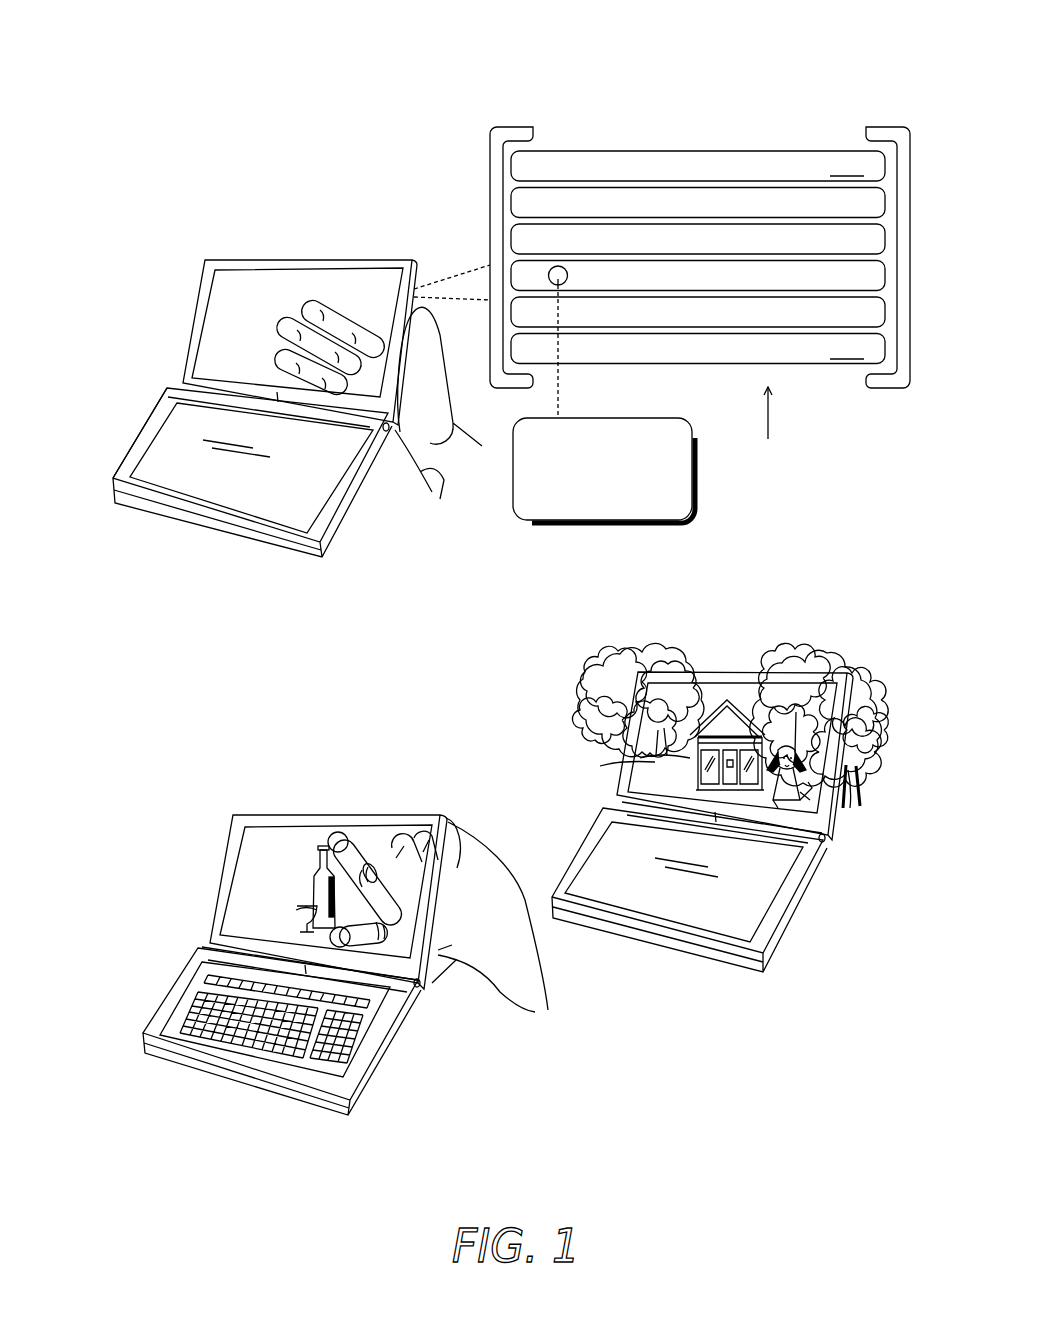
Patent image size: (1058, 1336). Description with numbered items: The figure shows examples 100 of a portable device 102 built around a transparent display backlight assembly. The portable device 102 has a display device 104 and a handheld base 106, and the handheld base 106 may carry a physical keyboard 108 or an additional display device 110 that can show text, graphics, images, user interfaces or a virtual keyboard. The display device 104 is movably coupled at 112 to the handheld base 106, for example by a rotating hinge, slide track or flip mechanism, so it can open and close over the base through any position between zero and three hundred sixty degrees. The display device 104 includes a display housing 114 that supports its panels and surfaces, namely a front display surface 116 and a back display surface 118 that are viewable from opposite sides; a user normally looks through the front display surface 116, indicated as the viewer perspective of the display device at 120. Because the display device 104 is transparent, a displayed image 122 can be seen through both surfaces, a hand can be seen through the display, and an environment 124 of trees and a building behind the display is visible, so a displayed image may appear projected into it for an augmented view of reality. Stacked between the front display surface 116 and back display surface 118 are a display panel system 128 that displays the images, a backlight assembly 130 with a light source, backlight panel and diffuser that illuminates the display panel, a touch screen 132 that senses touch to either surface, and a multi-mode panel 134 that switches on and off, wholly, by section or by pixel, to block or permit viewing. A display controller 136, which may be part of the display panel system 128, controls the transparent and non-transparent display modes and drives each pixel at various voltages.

The examples 100 is at (790, 64).
The portable device 102 is at (345, 528).
The display device 104 is at (363, 257).
The handheld base 106 is at (239, 530).
The physical keyboard 108 is at (300, 1062).
The additional display device 110 is at (215, 472).
The movable coupling 112 is at (207, 397).
The display housing 114 is at (492, 150).
The front display surface 116 is at (335, 293).
The back display surface 118 is at (263, 295).
The viewer perspective of the display device 120 is at (784, 442).
The displayed image 122 is at (318, 848).
The environment 124 is at (825, 650).
The display panel system 128 is at (830, 286).
The backlight assembly 130 is at (830, 249).
The touch screen 132 is at (830, 322).
The multi-mode panel 134 is at (830, 212).
The display controller 136 is at (583, 508).